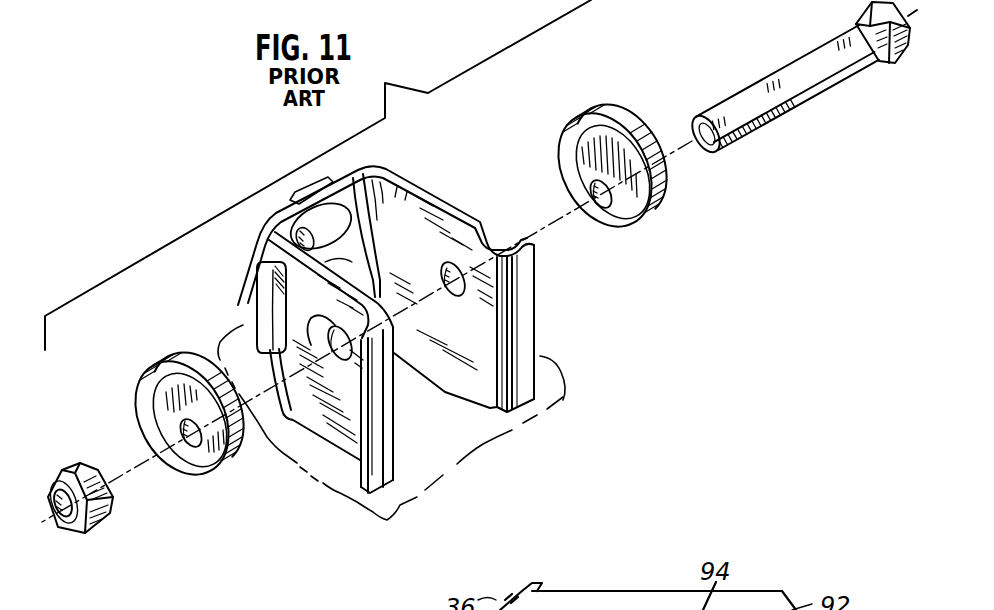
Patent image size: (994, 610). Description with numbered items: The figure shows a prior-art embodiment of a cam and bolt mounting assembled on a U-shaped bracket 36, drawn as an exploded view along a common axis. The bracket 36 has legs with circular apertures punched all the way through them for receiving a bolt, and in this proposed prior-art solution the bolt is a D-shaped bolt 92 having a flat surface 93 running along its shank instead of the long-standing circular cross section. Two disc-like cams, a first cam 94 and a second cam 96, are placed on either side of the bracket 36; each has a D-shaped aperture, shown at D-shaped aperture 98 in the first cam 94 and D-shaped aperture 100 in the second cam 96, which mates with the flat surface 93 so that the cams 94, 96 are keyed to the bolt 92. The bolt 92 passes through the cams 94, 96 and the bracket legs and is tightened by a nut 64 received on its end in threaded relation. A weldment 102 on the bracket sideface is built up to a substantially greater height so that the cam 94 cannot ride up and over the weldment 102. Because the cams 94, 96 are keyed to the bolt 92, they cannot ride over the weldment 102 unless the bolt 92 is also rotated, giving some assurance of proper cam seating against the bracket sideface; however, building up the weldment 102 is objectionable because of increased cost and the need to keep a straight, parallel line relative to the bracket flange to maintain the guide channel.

The U-shaped bracket 36 is at (287, 207).
The nut 64 is at (102, 528).
The D-shaped bolt 92 is at (830, 83).
The flat surface 93 is at (801, 63).
The cam 94 is at (160, 356).
The cam 96 is at (590, 110).
The D-shaped aperture 98 is at (197, 441).
The D-shaped aperture 100 is at (600, 212).
The weldment 102 is at (257, 302).